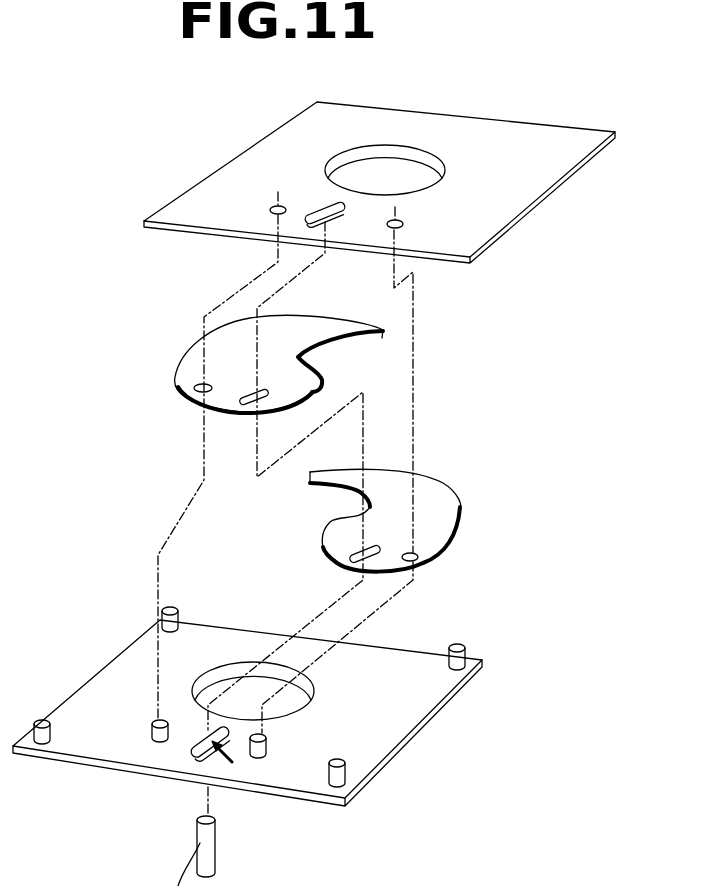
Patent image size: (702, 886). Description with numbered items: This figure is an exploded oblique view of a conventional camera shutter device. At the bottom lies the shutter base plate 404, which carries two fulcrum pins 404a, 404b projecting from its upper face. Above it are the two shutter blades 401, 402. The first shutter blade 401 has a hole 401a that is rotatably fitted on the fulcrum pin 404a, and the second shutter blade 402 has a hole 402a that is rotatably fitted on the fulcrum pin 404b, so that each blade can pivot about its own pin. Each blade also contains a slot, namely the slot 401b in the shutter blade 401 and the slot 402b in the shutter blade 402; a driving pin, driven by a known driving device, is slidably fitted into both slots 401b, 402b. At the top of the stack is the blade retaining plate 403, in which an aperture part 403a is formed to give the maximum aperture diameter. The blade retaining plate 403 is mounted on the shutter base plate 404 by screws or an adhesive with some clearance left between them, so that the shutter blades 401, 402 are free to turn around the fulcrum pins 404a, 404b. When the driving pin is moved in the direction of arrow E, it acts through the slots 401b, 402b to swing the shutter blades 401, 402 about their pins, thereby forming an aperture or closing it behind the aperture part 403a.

The shutter blade 401 is at (193, 352).
The hole 401a is at (194, 388).
The slot 401b is at (298, 389).
The shutter blade 402 is at (443, 512).
The hole 402a is at (418, 556).
The slot 402b is at (345, 549).
The blade retaining plate 403 is at (518, 227).
The aperture part 403a is at (420, 158).
The shutter base plate 404 is at (413, 735).
The fulcrum pin 404a is at (150, 730).
The fulcrum pin 404b is at (263, 742).
The arrow E is at (227, 750).